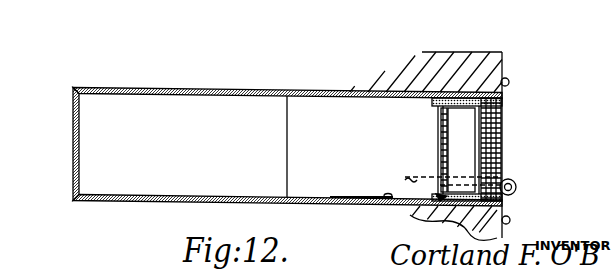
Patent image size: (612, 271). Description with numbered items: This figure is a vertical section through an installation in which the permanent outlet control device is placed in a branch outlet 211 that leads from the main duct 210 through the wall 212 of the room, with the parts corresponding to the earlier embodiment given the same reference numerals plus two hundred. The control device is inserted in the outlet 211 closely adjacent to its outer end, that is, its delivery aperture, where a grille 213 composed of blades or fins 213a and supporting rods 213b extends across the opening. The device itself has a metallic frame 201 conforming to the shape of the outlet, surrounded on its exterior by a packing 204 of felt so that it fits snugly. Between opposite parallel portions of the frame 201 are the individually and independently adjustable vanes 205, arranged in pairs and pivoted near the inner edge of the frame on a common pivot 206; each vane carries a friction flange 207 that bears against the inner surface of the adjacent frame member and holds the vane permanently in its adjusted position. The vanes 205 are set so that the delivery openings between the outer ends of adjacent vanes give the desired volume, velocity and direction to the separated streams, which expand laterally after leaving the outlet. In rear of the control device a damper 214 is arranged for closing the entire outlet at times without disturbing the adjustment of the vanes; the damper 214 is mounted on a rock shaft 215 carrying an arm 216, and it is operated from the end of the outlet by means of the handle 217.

The frame 201 is at (447, 147).
The packing 204 is at (503, 72).
The vanes 205 is at (460, 156).
The pivot 206 is at (438, 109).
The friction flange 207 is at (452, 110).
The main duct 210 is at (287, 147).
The outlet 211 is at (327, 106).
The wall 212 is at (470, 62).
The grille 213 is at (507, 101).
The blades or fins 213a is at (502, 123).
The supporting rods 213b is at (497, 114).
The damper 214 is at (389, 200).
The rock shaft 215 is at (440, 228).
The arm 216 is at (437, 196).
The handle 217 is at (516, 185).